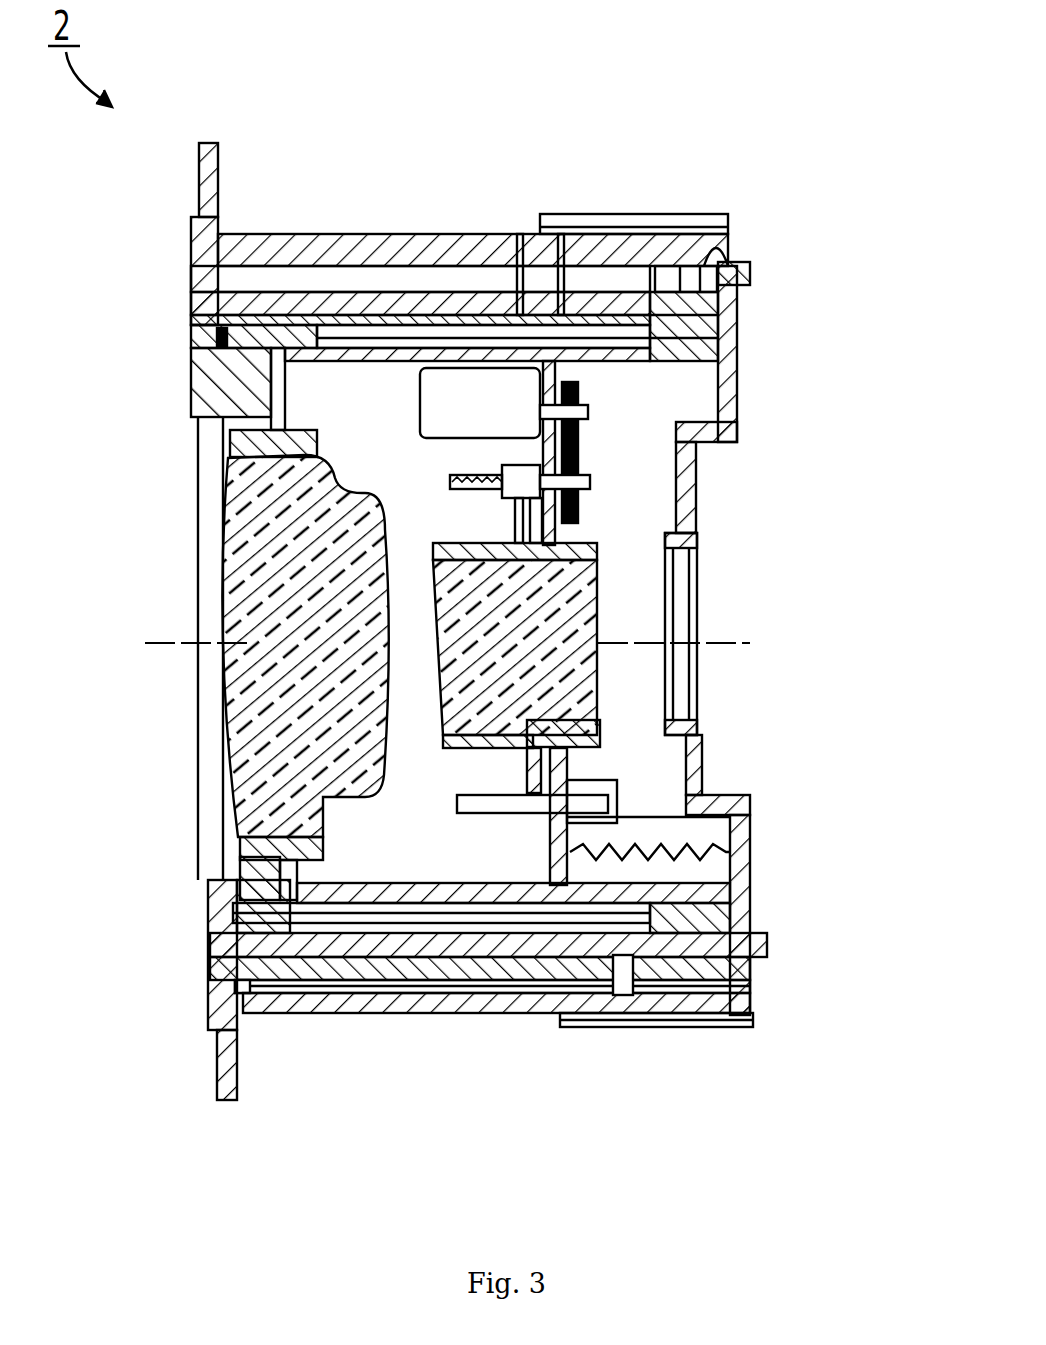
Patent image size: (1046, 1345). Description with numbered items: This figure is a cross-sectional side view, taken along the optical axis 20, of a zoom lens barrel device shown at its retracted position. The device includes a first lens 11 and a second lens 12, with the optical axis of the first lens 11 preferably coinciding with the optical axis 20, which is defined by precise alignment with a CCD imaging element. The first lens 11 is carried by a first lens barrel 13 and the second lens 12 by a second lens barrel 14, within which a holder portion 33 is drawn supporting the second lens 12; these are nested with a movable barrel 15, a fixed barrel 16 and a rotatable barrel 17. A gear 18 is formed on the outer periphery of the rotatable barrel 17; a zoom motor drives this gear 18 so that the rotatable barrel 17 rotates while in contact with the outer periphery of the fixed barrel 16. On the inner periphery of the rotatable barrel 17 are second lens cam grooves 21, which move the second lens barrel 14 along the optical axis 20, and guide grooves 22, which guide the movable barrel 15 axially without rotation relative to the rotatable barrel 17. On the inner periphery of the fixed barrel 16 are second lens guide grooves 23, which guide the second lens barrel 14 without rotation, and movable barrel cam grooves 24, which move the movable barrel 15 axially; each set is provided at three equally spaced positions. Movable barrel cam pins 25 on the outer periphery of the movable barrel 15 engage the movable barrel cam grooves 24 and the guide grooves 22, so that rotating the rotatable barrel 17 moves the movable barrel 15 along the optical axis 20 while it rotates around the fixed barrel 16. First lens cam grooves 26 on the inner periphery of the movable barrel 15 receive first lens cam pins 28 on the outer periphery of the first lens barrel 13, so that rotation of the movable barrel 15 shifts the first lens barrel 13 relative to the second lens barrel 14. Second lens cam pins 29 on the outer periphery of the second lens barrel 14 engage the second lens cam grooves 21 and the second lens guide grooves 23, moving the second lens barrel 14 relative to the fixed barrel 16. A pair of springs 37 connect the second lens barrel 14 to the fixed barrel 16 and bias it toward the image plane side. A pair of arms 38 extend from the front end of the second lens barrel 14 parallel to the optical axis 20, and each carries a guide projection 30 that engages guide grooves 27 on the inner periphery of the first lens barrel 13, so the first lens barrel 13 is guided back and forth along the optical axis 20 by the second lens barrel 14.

The first lens 11 is at (236, 768).
The second lens 12 is at (440, 725).
The first lens barrel 13 is at (200, 384).
The second lens barrel 14 is at (433, 886).
The movable barrel 15 is at (330, 948).
The fixed barrel 16 is at (412, 968).
The rotatable barrel 17 is at (429, 233).
The gear 18 is at (668, 214).
The optical axis 20 is at (163, 645).
The second lens cam grooves 21 is at (735, 243).
The guide grooves 22 is at (490, 1000).
The second lens guide grooves 23 is at (394, 279).
The movable barrel cam grooves 24 is at (672, 1027).
The movable barrel cam pins 25 is at (624, 1012).
The first lens cam grooves 26 is at (562, 300).
The guide grooves 27 is at (342, 330).
The first lens cam pins 28 is at (520, 300).
The second lens cam pins 29 is at (748, 280).
The guide projections 30 is at (222, 338).
The rear lens holder 33 is at (445, 536).
The springs 37 is at (660, 850).
The arms 38 is at (325, 361).